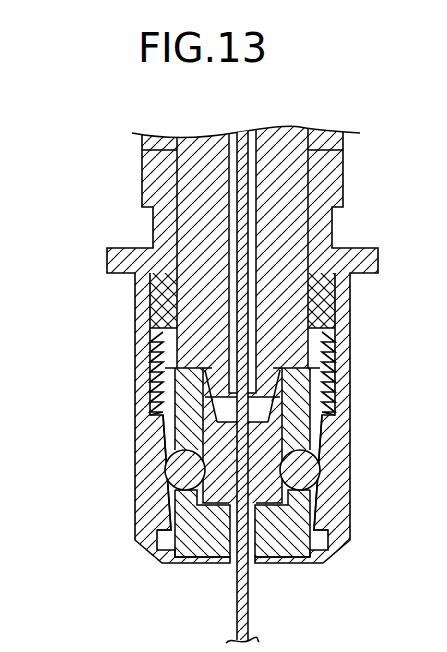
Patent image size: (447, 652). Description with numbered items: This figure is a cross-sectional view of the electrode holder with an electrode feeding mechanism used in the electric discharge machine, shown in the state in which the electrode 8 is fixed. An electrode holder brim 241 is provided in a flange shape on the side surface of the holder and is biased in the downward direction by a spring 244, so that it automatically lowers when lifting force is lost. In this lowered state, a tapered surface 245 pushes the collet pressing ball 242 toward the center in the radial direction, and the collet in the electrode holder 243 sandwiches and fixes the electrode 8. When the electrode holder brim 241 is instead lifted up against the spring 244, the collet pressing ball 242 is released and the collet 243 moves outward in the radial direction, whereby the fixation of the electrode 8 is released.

The electrode holder brim 241 is at (111, 262).
The collet pressing ball 242 is at (177, 470).
The collet in the electrode holder 243 is at (185, 437).
The spring 244 is at (149, 366).
The tapered surface 245 is at (163, 547).
The electrode 8 is at (236, 611).